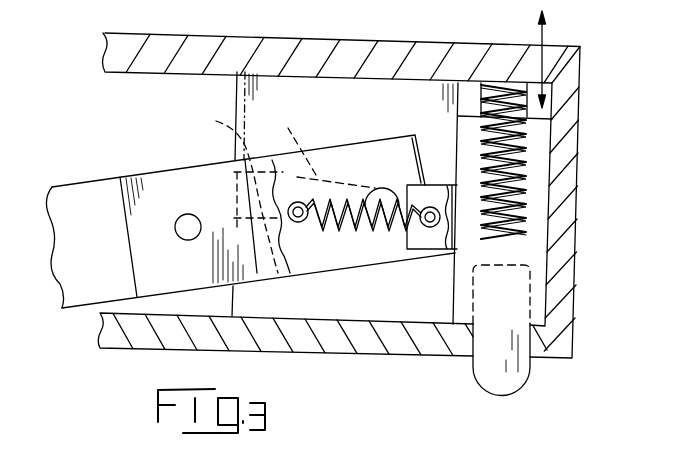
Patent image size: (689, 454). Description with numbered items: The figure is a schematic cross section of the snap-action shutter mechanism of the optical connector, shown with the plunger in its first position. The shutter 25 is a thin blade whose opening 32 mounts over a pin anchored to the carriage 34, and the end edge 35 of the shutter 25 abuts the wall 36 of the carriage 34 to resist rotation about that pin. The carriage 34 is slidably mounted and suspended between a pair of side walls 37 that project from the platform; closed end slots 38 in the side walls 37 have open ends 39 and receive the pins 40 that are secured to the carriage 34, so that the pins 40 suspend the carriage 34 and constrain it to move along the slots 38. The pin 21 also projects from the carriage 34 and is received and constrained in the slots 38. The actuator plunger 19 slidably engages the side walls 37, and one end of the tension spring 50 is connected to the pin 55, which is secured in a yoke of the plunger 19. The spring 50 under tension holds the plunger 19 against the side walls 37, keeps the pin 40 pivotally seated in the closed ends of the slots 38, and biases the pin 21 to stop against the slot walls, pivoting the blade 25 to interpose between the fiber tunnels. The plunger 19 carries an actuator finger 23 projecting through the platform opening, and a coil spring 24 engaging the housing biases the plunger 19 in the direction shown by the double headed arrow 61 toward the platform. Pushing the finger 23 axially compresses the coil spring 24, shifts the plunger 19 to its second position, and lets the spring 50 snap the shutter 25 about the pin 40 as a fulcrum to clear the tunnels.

The actuator plunger 19 is at (540, 222).
The pin 21 is at (282, 265).
The actuator finger 23 is at (526, 382).
The coil spring 24 is at (527, 150).
The shutter 25 is at (78, 197).
The opening 32 is at (178, 236).
The carriage 34 is at (338, 153).
The end edge 35 is at (280, 282).
The wall 36 is at (229, 190).
The side walls 37 is at (395, 111).
The closed end slots 38 is at (322, 145).
The open ends 39 is at (240, 217).
The pin 40 is at (382, 186).
The spring 50 is at (364, 233).
The pin 55 is at (428, 232).
The double headed arrow 61 is at (545, 38).